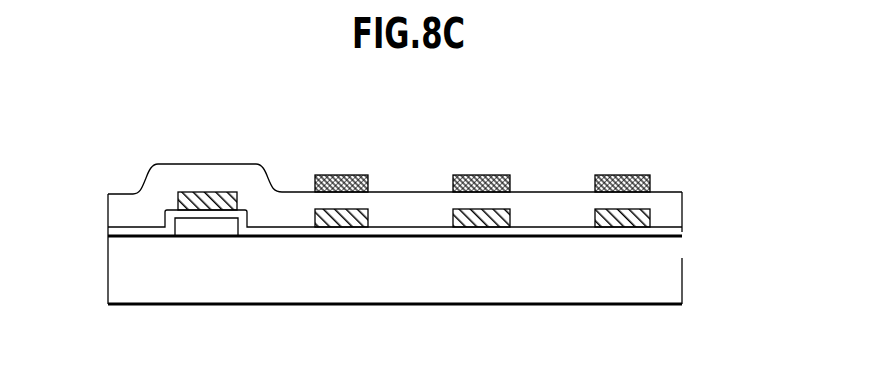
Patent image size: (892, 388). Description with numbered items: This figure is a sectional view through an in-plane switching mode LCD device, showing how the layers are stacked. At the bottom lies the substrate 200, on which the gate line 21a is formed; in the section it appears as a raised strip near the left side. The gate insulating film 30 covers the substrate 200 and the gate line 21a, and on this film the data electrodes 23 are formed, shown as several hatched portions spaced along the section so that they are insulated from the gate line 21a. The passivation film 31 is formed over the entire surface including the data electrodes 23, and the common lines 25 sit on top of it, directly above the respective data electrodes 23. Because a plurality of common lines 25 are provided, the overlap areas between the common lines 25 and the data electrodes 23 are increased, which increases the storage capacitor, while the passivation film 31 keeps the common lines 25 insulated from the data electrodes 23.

The substrate 200 is at (678, 278).
The gate insulating film 30 is at (677, 230).
The gate line 21a is at (207, 232).
The passivation film 31 is at (675, 203).
The data electrode 23 is at (680, 218).
The common line 25 is at (341, 175).